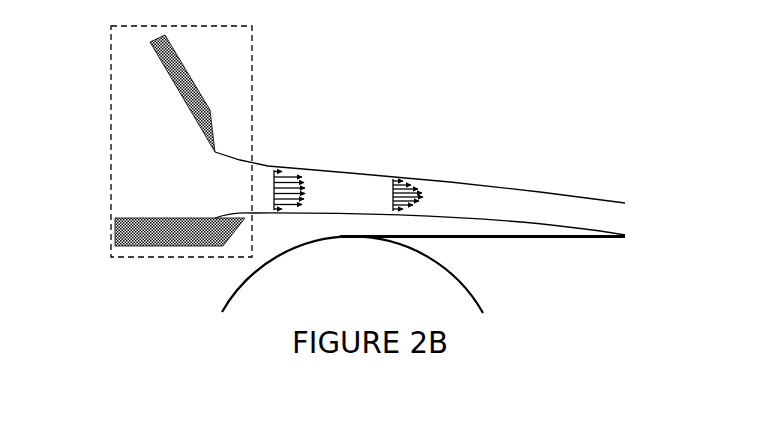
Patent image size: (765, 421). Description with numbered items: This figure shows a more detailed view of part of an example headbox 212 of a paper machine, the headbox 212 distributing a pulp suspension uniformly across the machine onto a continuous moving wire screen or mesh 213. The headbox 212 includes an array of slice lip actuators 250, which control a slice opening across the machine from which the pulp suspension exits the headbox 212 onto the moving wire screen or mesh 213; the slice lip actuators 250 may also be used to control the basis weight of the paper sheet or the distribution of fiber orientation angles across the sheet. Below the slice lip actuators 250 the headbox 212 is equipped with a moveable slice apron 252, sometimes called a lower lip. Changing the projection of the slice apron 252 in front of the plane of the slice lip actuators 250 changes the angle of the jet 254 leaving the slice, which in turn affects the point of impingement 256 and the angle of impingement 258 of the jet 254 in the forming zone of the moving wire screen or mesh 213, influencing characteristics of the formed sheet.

The headbox 212 is at (106, 83).
The moving wire screen or mesh 213 is at (490, 242).
The slice lip actuators 250 is at (166, 84).
The slice apron 252 is at (189, 213).
The jet 254 is at (404, 167).
The point of impingement 256 is at (548, 222).
The angle of impingement 258 is at (549, 241).